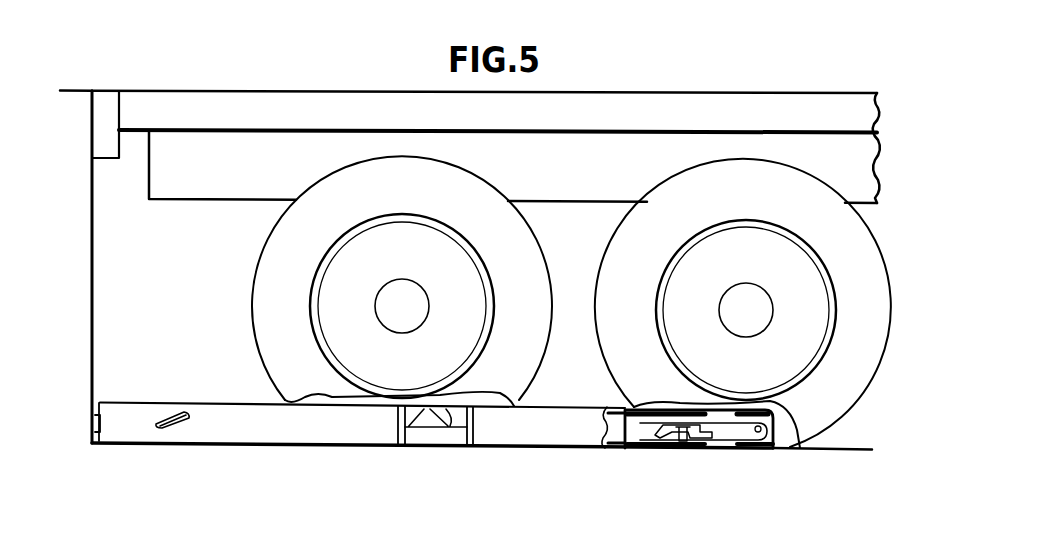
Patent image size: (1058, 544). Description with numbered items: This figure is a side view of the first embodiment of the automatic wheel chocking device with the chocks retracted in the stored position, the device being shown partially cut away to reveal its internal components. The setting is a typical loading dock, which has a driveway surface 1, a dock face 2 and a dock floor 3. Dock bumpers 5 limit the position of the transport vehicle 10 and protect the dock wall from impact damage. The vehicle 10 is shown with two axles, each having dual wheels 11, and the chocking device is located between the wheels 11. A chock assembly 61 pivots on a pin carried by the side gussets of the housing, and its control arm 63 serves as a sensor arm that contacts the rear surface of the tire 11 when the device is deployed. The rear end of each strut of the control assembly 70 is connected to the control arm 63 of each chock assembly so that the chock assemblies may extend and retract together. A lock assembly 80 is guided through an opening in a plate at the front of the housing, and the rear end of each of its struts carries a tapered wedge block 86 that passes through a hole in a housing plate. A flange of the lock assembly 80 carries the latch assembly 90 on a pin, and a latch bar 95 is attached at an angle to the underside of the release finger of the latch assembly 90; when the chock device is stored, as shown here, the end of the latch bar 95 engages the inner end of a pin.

The driveway surface 1 is at (845, 449).
The dock face 2 is at (93, 298).
The dock floor 3 is at (78, 91).
The dock bumpers 5 is at (108, 148).
The transport vehicle 10 is at (217, 102).
The wheels 11 is at (265, 290).
The chock assembly 61 is at (473, 426).
The control arm 63 is at (196, 380).
The control assembly 70 is at (608, 410).
The lock assembly 80 is at (775, 428).
The tapered wedge block 86 is at (658, 440).
The latch assembly 90 is at (732, 450).
The latch bar 95 is at (680, 442).